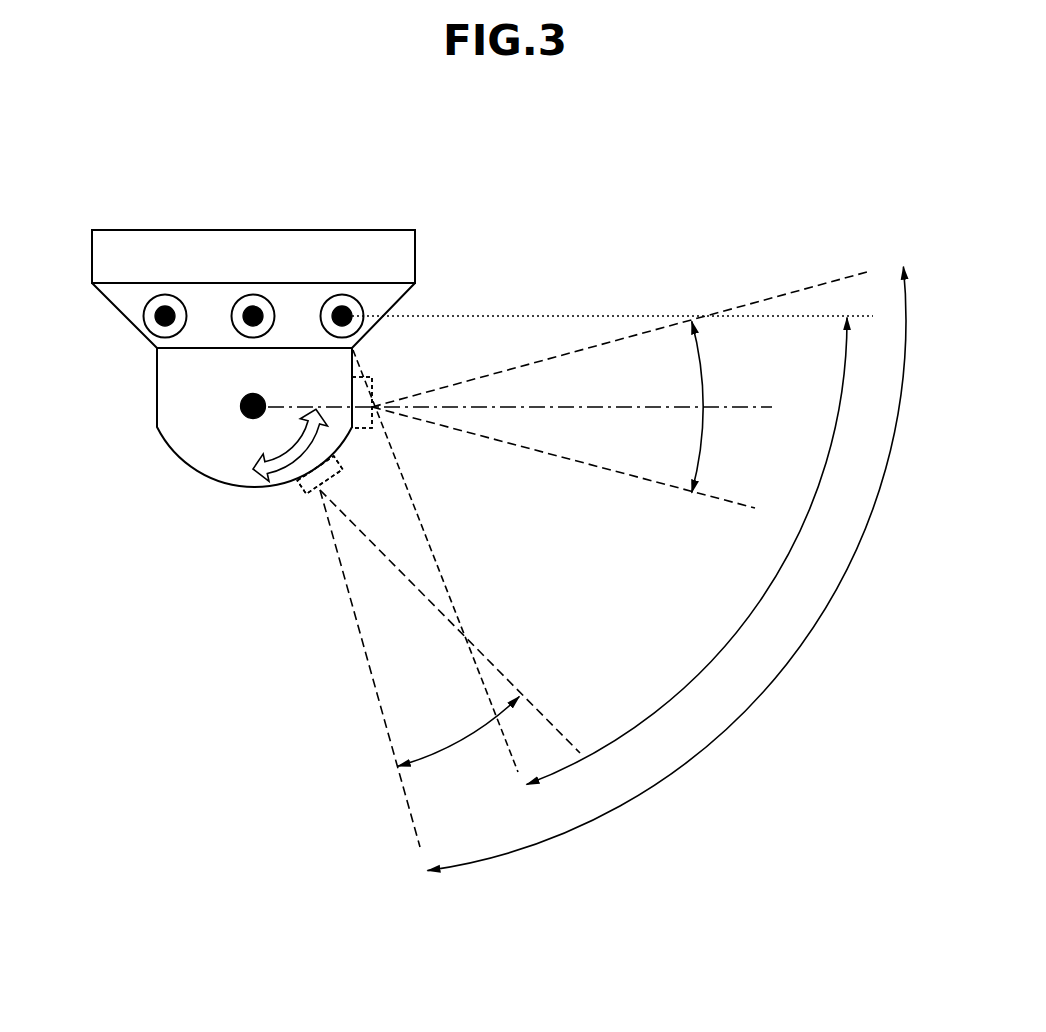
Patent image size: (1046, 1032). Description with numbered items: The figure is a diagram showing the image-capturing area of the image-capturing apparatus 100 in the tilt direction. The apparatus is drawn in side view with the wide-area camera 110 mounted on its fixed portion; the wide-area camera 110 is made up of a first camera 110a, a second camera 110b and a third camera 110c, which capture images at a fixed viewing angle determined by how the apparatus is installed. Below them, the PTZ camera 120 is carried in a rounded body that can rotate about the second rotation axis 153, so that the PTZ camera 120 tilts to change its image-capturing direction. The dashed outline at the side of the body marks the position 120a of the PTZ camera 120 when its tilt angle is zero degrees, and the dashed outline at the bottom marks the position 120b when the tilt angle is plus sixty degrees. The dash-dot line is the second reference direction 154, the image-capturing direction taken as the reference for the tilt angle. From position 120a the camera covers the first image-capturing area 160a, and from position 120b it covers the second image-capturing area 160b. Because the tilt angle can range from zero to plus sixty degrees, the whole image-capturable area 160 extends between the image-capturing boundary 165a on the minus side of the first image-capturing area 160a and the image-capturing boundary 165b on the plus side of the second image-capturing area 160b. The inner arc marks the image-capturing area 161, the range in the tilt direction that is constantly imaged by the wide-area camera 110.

The image-capturing apparatus 100 is at (327, 190).
The wide-area camera 110 is at (497, 243).
The first camera 110a is at (166, 294).
The second camera 110b is at (254, 294).
The third camera 110c is at (343, 294).
The PTZ camera 120 is at (374, 376).
The position of the PTZ camera at tilt angle 0° 120a is at (373, 396).
The position of the PTZ camera at tilt angle +60° 120b is at (292, 495).
The second rotation axis 153 is at (253, 418).
The second reference direction 154 is at (648, 404).
The image-capturable area 160 is at (797, 650).
The first image-capturing area 160a is at (705, 380).
The second image-capturing area 160b is at (450, 760).
The image-capturing area 161 is at (722, 650).
The image-capturing boundary on the minus side 165a is at (806, 290).
The image-capturing boundary on the plus side 165b is at (398, 805).